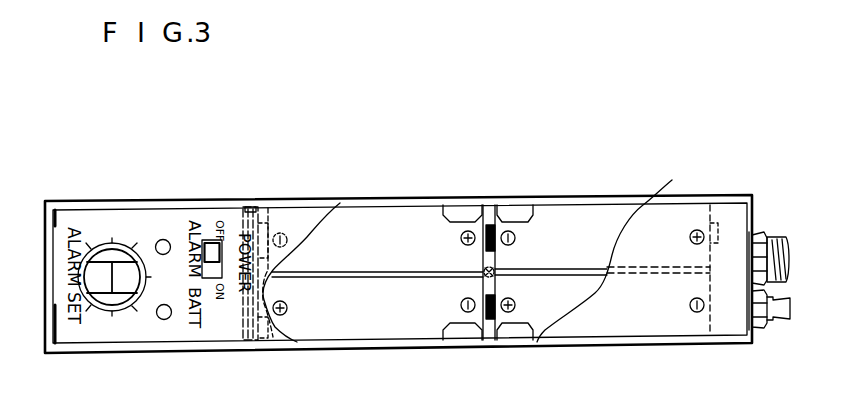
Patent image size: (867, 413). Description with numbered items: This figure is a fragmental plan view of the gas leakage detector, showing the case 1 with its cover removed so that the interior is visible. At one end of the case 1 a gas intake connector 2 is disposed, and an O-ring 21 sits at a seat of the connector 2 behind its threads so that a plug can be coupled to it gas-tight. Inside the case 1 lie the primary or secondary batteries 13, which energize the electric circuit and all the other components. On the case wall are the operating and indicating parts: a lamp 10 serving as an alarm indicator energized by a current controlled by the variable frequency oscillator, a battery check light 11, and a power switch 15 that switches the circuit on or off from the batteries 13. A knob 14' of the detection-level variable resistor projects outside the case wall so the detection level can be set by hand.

The case 1 is at (725, 215).
The gas intake connector 2 is at (760, 233).
The O-ring 21 is at (767, 235).
The lamp 10 is at (163, 240).
The battery check light 11 is at (164, 320).
The batteries 13 is at (553, 222).
The knob 14' is at (126, 226).
The power switch 15 is at (202, 240).